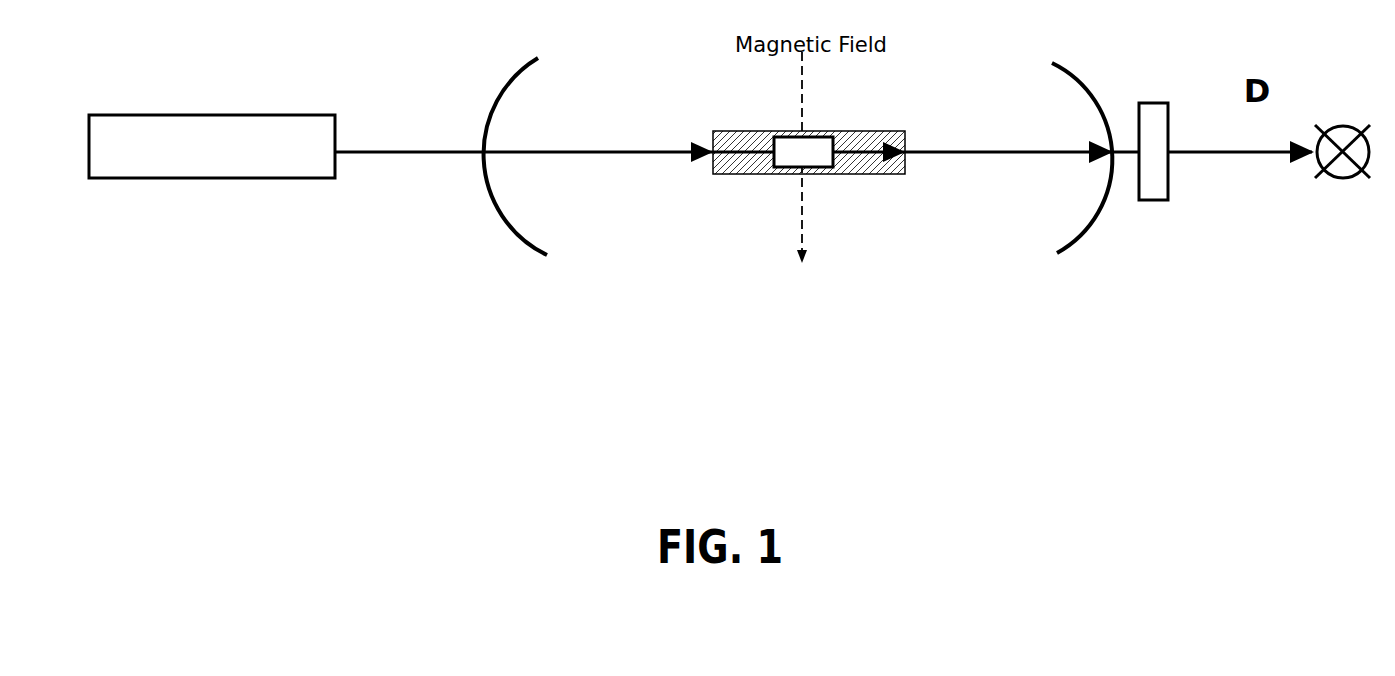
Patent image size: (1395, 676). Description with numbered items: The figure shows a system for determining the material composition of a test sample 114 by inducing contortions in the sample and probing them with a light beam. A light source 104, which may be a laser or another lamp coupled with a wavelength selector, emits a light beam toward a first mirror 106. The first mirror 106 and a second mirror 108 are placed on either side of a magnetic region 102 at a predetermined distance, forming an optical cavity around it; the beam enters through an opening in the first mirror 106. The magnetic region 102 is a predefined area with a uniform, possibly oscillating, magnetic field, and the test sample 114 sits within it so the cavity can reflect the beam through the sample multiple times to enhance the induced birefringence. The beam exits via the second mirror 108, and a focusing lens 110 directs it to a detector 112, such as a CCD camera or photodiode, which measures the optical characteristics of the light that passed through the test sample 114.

The magnetic region 102 is at (730, 174).
The light source 104 is at (180, 178).
The first mirror 106 is at (507, 223).
The second mirror 108 is at (1080, 243).
The focusing lens 110 is at (1155, 200).
The detector 112 is at (1332, 170).
The test sample 114 is at (828, 167).